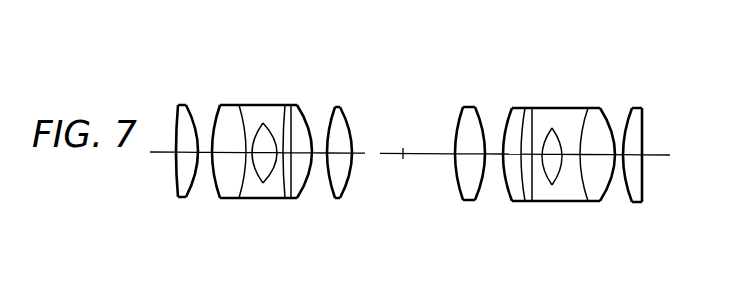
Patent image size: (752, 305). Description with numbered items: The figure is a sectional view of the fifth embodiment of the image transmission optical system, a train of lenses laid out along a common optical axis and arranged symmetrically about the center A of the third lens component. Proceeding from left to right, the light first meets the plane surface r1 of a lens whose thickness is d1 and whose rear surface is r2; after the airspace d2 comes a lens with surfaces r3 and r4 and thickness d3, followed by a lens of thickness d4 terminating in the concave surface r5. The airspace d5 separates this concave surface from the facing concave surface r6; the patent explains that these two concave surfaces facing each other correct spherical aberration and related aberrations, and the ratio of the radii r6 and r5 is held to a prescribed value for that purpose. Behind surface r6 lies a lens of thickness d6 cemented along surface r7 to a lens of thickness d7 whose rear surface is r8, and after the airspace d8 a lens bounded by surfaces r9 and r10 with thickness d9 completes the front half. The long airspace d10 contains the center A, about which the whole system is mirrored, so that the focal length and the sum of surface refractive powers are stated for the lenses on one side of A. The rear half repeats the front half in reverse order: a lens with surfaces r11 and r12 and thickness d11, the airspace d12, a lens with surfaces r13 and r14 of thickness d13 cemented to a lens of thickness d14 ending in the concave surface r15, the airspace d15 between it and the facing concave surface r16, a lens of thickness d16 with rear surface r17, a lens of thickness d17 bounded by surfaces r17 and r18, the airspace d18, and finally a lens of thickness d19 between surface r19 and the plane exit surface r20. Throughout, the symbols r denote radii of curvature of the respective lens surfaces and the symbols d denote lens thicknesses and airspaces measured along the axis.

The radius of curvature of first lens surface r1 is at (178, 105).
The radius of curvature of second lens surface r2 is at (191, 105).
The radius of curvature of third lens surface r3 is at (219, 108).
The radius of curvature of fourth lens surface r4 is at (240, 105).
The radius of curvature of fifth lens surface r5 is at (258, 124).
The radius of curvature of sixth lens surface r6 is at (265, 124).
The radius of curvature of seventh lens surface r7 is at (284, 114).
The radius of curvature of eighth lens surface r8 is at (303, 114).
The radius of curvature of ninth lens surface r9 is at (330, 114).
The radius of curvature of tenth lens surface r10 is at (349, 114).
The radius of curvature of eleventh lens surface r11 is at (458, 109).
The radius of curvature of twelfth lens surface r12 is at (478, 108).
The radius of curvature of thirteenth lens surface r13 is at (506, 113).
The radius of curvature of fourteenth lens surface r14 is at (523, 110).
The radius of curvature of fifteenth lens surface r15 is at (547, 128).
The radius of curvature of sixteenth lens surface r16 is at (560, 128).
The radius of curvature of seventeenth lens surface r17 is at (583, 113).
The radius of curvature of eighteenth lens surface r18 is at (609, 115).
The radius of curvature of nineteenth lens surface r19 is at (624, 114).
The radius of curvature of twentieth lens surface r20 is at (644, 113).
The thickness of first lens d1 is at (183, 153).
The airspace between first and second lenses d2 is at (203, 153).
The thickness of second lens d3 is at (227, 153).
The thickness of third lens d4 is at (250, 153).
The airspace between facing concave surfaces d5 is at (270, 153).
The thickness of fourth lens d6 is at (280, 153).
The thickness of fifth lens d7 is at (302, 153).
The airspace between fifth and sixth lenses d8 is at (323, 153).
The thickness of sixth lens d9 is at (347, 153).
The central airspace d10 is at (371, 150).
The center of the third lens component A is at (403, 165).
The thickness of seventh lens d11 is at (470, 154).
The airspace between seventh and eighth lenses d12 is at (495, 154).
The thickness of eighth lens d13 is at (513, 154).
The thickness of ninth lens d14 is at (537, 154).
The airspace between facing concave surfaces of rear group d15 is at (555, 154).
The thickness of tenth lens d16 is at (575, 154).
The thickness of eleventh lens d17 is at (597, 154).
The airspace between eleventh and twelfth lenses d18 is at (618, 154).
The thickness of twelfth lens d19 is at (638, 154).